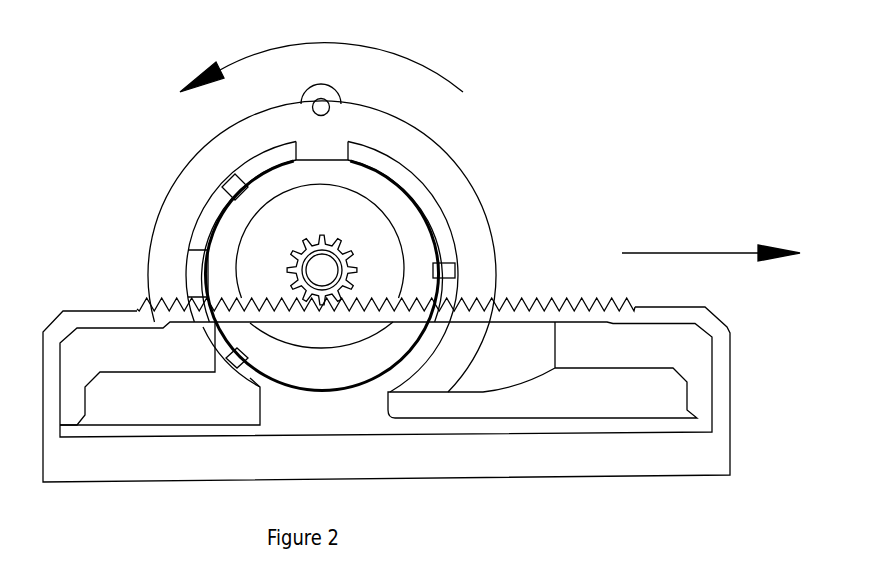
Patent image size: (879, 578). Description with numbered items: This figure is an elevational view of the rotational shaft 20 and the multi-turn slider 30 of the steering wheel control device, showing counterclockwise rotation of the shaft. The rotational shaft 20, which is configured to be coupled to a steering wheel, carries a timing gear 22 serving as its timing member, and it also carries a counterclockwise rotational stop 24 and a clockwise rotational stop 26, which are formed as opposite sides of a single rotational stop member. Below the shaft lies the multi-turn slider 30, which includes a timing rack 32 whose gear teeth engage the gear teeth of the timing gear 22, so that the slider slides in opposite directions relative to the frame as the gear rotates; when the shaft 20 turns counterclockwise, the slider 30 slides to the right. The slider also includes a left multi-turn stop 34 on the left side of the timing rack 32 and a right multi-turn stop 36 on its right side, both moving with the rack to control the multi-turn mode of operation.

The rotational shaft 20 is at (438, 153).
The timing gear 22 is at (326, 240).
The counterclockwise rotational stop 24 is at (237, 335).
The clockwise rotational stop 26 is at (236, 198).
The multi-turn slider 30 is at (713, 327).
The timing rack 32 is at (547, 317).
The left multi-turn stop 34 is at (108, 360).
The right multi-turn stop 36 is at (677, 353).